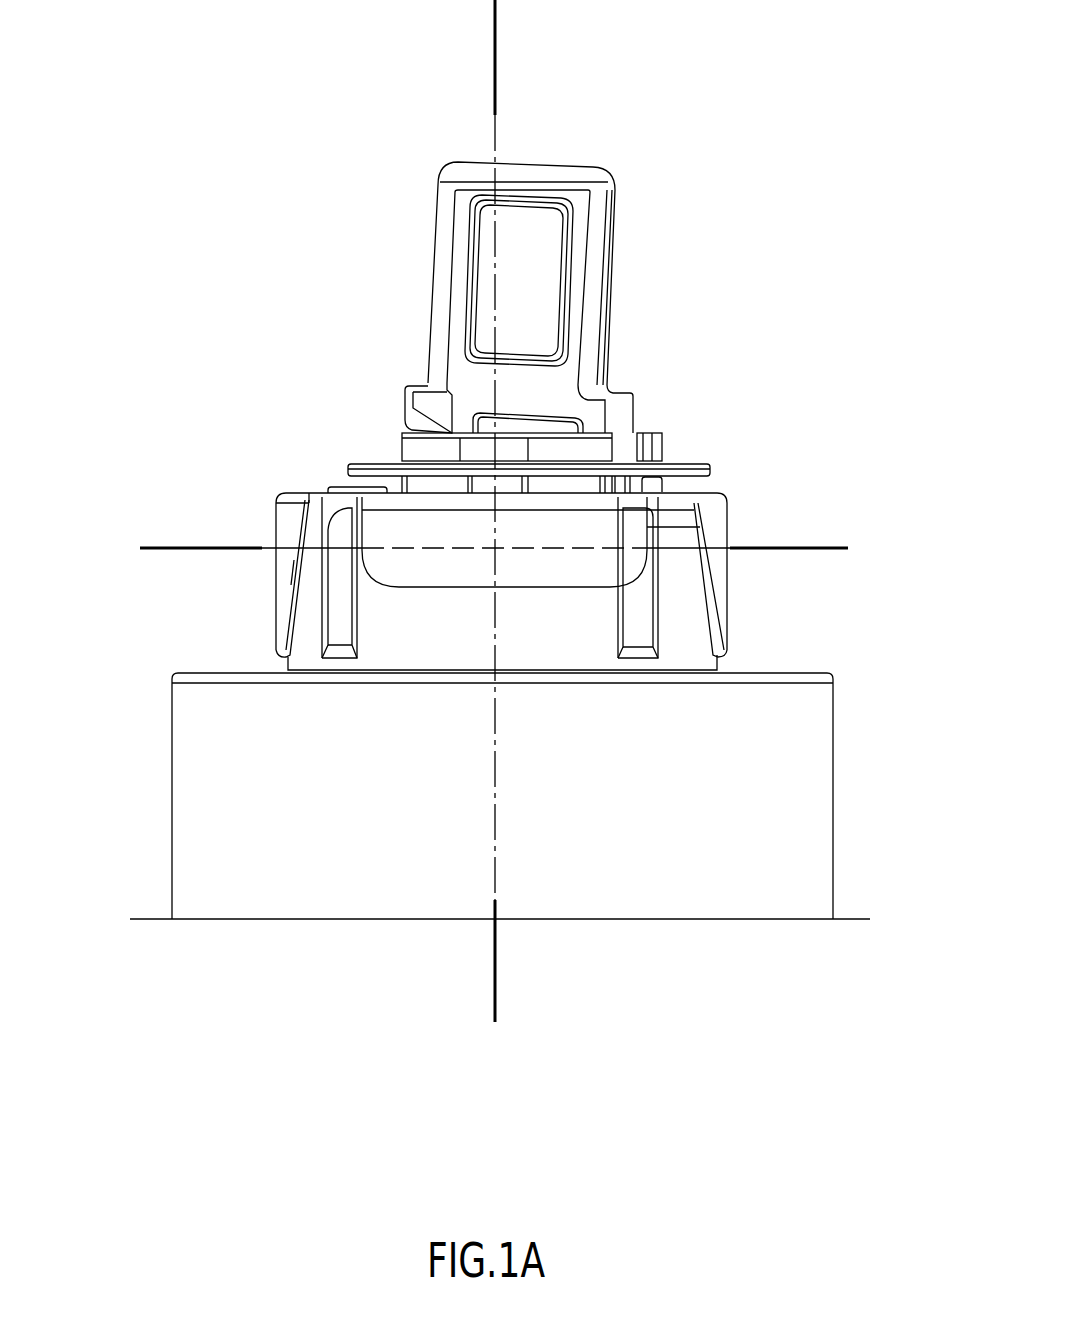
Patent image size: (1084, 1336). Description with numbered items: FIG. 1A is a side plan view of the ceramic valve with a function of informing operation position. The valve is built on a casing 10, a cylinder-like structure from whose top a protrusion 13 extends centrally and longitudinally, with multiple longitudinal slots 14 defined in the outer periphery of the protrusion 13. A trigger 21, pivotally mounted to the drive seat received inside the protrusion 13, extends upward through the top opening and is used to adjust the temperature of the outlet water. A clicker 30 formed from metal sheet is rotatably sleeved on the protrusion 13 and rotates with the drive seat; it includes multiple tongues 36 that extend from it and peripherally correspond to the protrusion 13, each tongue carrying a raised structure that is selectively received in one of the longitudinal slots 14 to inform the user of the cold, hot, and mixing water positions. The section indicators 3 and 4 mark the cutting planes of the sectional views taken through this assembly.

The casing 10 is at (295, 775).
The protrusion 13 is at (668, 643).
The longitudinal slots 14 is at (342, 618).
The trigger 21 is at (443, 193).
The clicker 30 is at (518, 527).
The tongues 36 is at (287, 578).
The section line 3- 3 is at (812, 520).
The section line 4- 4 is at (558, 997).